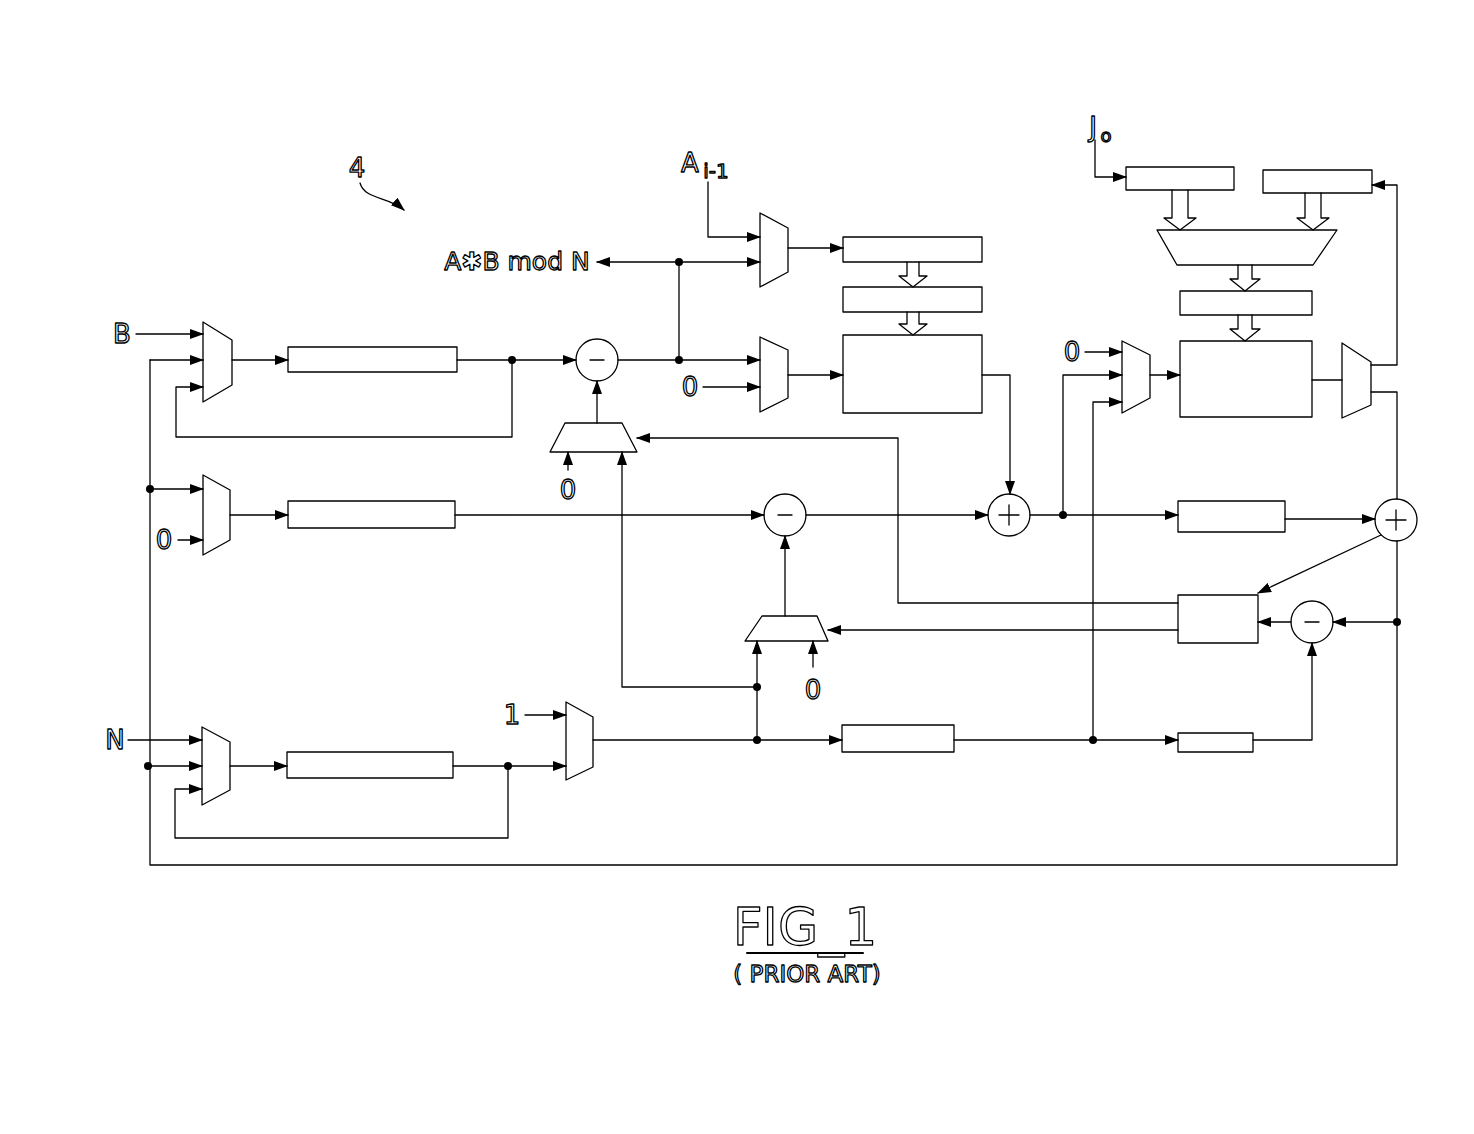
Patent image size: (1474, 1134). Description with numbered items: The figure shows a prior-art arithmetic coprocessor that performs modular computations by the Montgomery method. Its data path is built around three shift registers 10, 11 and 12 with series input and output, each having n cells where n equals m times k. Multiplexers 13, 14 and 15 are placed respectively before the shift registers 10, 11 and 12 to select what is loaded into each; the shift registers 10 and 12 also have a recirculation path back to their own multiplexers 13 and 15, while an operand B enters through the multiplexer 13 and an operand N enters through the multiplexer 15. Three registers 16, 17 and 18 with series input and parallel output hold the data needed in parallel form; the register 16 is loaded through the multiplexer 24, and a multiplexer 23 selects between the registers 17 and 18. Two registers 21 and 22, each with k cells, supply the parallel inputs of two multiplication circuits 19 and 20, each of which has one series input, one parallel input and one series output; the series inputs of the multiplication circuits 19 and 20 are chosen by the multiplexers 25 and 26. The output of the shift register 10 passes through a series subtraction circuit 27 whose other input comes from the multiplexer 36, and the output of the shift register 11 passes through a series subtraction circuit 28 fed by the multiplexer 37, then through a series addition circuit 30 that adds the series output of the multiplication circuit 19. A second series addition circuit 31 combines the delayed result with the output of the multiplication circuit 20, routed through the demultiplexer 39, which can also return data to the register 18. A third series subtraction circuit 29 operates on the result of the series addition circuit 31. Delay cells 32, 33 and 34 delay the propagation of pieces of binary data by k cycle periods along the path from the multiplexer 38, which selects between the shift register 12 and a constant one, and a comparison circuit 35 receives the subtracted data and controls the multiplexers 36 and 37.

The shift register 10 is at (357, 347).
The shift register 11 is at (365, 528).
The shift register 12 is at (370, 752).
The multiplexer 13 is at (218, 322).
The multiplexer 14 is at (221, 547).
The multiplexer 15 is at (218, 730).
The register 16 is at (982, 246).
The register 17 is at (1183, 167).
The register 18 is at (1313, 170).
The multiplication circuit 19 is at (945, 413).
The multiplication circuit 20 is at (1243, 417).
The register 21 is at (982, 296).
The register 22 is at (1312, 303).
The multiplexer 23 is at (1330, 243).
The multiplexer 24 is at (778, 220).
The multiplexer 25 is at (772, 338).
The multiplexer 26 is at (1133, 341).
The series subtraction circuit 27 is at (593, 340).
The series subtraction circuit 28 is at (800, 498).
The series subtraction circuit 29 is at (1325, 603).
The series addition circuit 30 is at (1000, 537).
The series addition circuit 31 is at (1417, 523).
The delay cell 32 is at (897, 752).
The delay cell 33 is at (1218, 752).
The delay cell 34 is at (1225, 532).
The comparison circuit 35 is at (1215, 643).
The multiplexer 36 is at (548, 447).
The multiplexer 37 is at (750, 630).
The multiplexer 38 is at (590, 775).
The demultiplexer 39 is at (1360, 408).